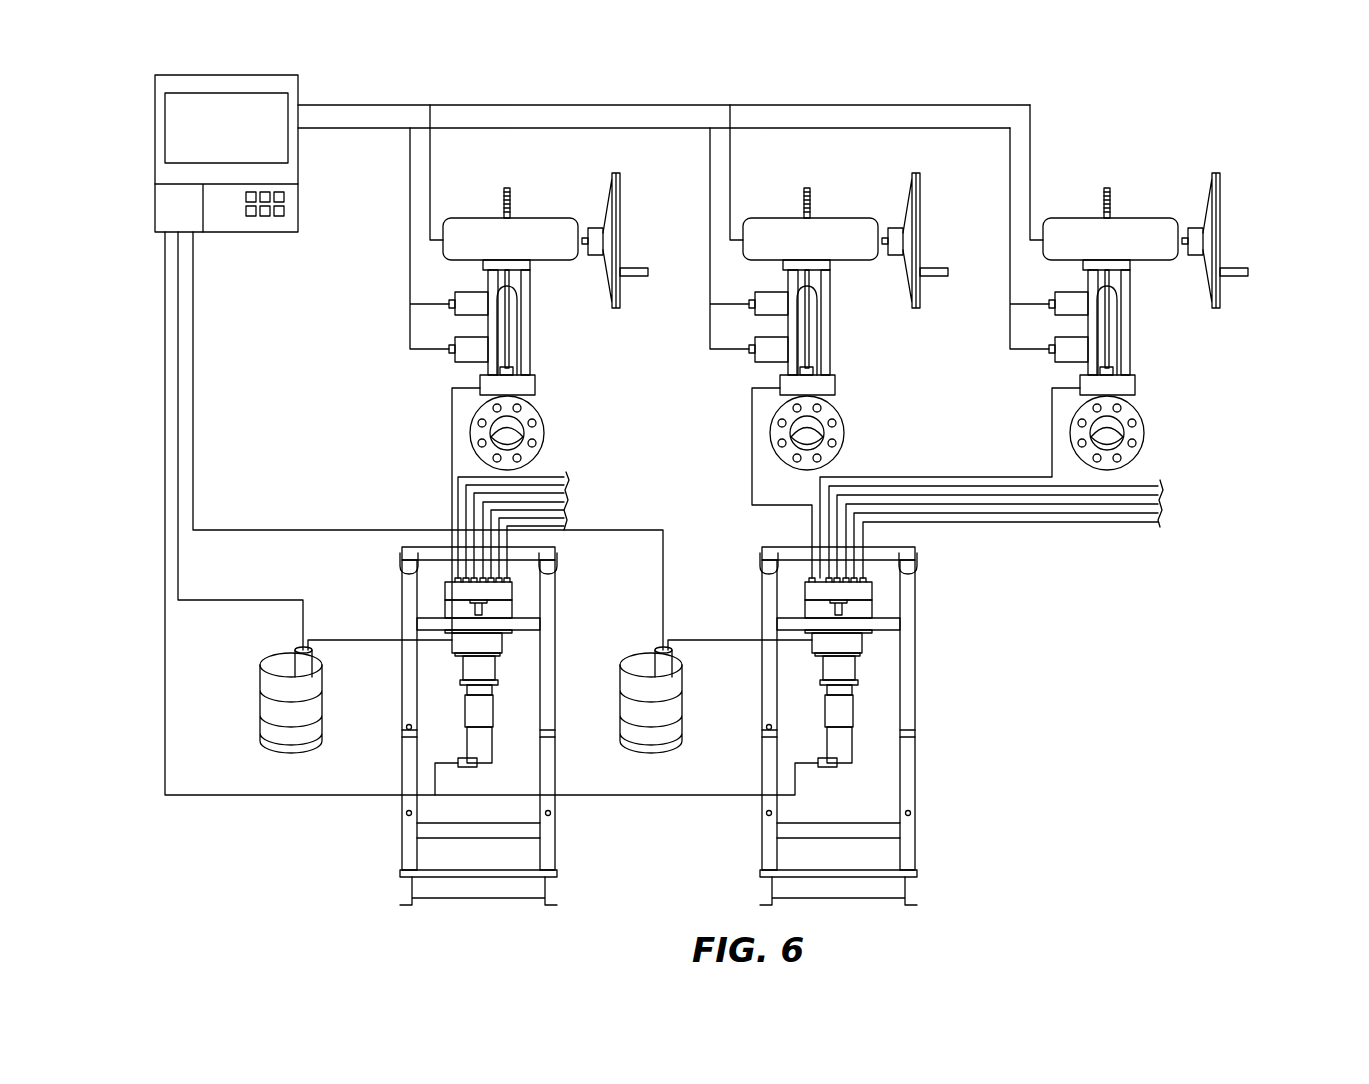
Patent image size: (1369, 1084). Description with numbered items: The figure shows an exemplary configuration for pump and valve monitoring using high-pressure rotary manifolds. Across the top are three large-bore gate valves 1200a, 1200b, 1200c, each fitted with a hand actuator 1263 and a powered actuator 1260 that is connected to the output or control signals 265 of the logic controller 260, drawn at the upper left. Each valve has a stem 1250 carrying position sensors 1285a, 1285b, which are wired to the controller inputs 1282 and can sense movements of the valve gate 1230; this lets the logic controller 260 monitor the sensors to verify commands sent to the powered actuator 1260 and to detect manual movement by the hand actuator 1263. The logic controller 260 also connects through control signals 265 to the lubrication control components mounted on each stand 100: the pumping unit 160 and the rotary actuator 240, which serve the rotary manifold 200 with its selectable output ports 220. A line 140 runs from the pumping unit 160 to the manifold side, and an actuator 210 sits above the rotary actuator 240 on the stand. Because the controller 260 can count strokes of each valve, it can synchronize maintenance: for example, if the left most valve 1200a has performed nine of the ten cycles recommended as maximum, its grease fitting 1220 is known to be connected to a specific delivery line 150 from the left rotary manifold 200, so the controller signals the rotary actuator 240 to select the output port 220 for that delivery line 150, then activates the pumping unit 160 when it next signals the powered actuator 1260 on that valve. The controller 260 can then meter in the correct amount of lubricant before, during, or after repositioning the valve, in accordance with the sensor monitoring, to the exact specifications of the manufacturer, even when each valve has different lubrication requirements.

The logic controller 260 is at (232, 75).
The output or control signals 265 is at (597, 432).
The inputs 1282 is at (654, 162).
The left most valve 1200a is at (481, 287).
The valve 1200b is at (836, 206).
The valve 1200c is at (1168, 287).
The stem 1250 is at (1104, 200).
The powered actuator 1260 is at (1130, 218).
The hand actuator 1263 is at (1222, 215).
The position sensor 1285a is at (468, 292).
The position sensor 1285b is at (468, 337).
The grease fitting 1220 is at (478, 388).
The delivery line 150 is at (452, 448).
The gate 1230 is at (1110, 427).
The supply line 140 is at (362, 638).
The output port 220 is at (512, 583).
The rotary manifold 200 is at (527, 605).
The pumping unit 160 is at (258, 710).
The actuator 210 is at (452, 642).
The rotary actuator 240 is at (467, 748).
The stand 100 is at (666, 726).